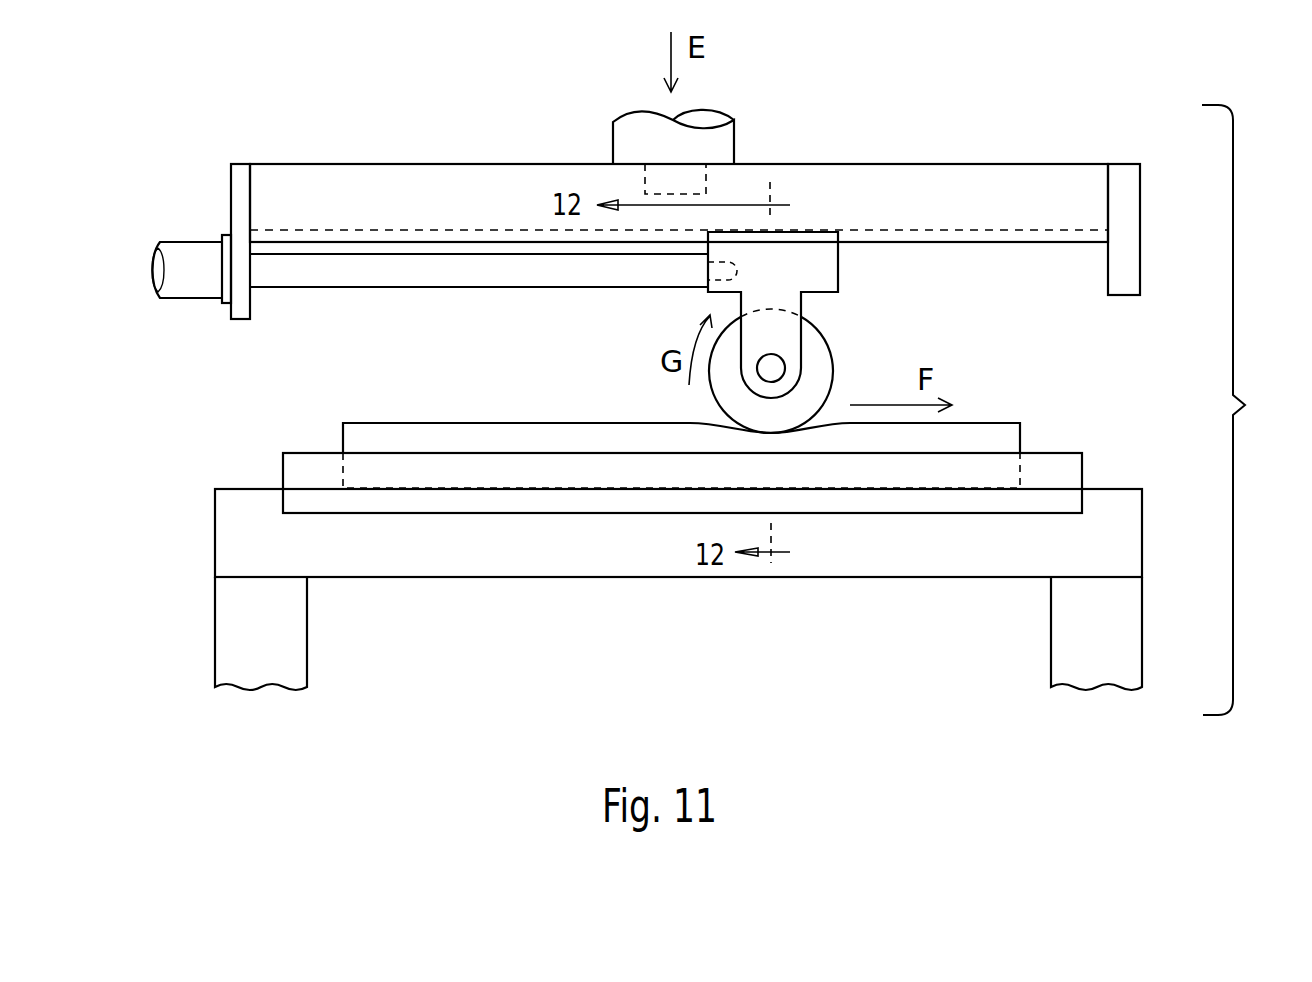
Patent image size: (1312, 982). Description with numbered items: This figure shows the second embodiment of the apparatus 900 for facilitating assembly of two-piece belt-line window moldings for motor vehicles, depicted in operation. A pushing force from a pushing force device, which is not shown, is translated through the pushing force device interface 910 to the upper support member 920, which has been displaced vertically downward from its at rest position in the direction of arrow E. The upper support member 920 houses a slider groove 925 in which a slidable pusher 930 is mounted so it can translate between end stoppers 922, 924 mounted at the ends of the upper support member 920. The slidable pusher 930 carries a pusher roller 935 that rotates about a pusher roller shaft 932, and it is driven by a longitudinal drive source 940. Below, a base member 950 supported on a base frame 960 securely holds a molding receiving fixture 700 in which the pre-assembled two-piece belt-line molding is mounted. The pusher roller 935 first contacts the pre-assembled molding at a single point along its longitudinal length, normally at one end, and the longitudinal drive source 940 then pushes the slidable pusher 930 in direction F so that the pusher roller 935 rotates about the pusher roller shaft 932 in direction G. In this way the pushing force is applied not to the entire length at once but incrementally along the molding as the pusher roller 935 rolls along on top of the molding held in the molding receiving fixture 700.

The apparatus 900 is at (1253, 410).
The pushing force device interface 910 is at (724, 143).
The upper support member 920 is at (1053, 175).
The end stopper 922 is at (240, 307).
The end stopper 924 is at (1125, 275).
The slider groove 925 is at (958, 232).
The slidable pusher 930 is at (828, 256).
The pusher roller shaft 932 is at (768, 378).
The pusher roller 935 is at (815, 368).
The longitudinal drive source 940 is at (181, 247).
The molding receiving fixture 700 is at (1062, 472).
The base member 950 is at (1127, 548).
The base frame 960 is at (293, 645).